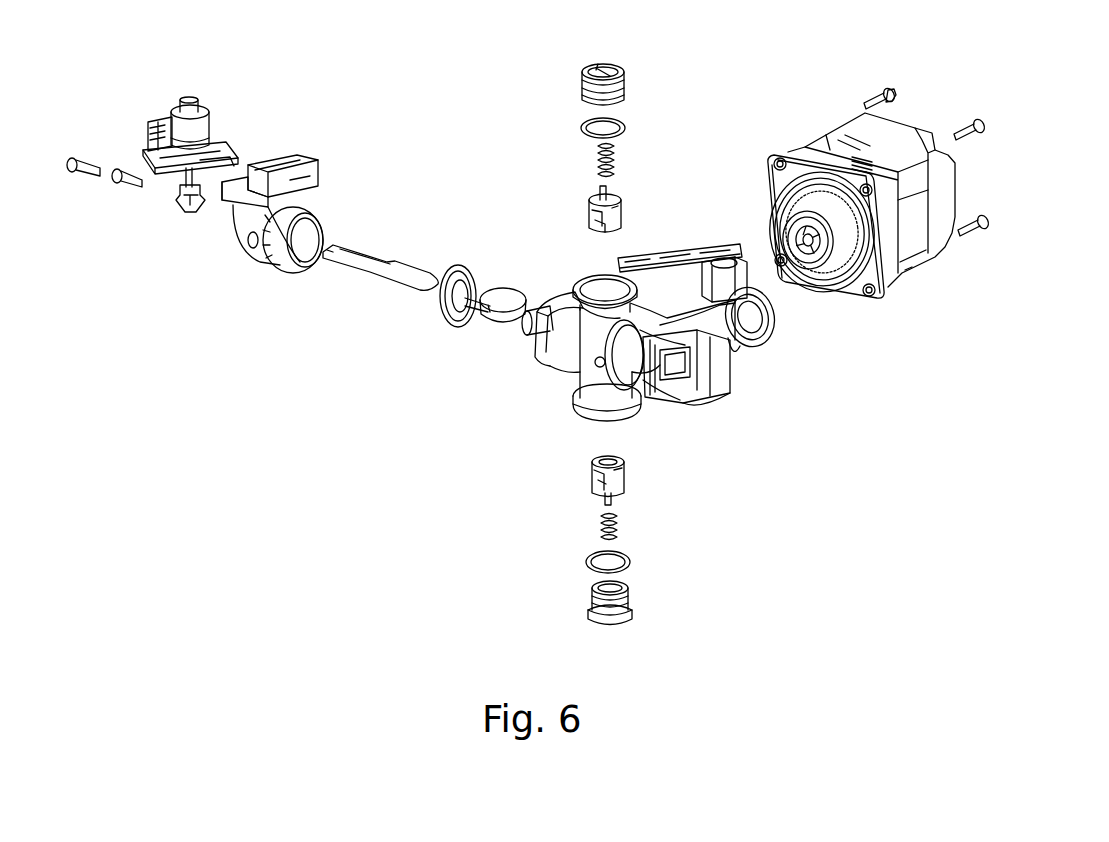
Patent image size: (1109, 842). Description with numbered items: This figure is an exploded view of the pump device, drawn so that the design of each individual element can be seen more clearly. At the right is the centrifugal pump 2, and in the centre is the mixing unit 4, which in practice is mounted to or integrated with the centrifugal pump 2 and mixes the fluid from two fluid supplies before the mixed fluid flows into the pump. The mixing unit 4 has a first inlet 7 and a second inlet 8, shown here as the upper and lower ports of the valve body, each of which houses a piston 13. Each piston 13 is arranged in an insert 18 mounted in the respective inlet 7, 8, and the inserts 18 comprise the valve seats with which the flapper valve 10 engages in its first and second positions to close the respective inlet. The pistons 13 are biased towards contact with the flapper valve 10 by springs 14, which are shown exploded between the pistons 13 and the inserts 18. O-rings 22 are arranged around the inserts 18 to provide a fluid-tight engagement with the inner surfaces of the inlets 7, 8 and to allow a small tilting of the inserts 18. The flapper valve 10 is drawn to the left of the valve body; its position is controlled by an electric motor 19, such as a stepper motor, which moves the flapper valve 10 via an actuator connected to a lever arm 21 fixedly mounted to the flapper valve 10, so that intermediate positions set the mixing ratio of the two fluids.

The centrifugal pump 2 is at (815, 105).
The mixing unit 4 is at (567, 355).
The first inlet 7 is at (603, 288).
The second inlet 8 is at (598, 403).
The flapper valve 10 is at (498, 320).
The piston 13 is at (590, 218).
The spring 14 is at (597, 165).
The insert 18 is at (615, 85).
The electric motor 19 is at (225, 110).
The lever arm 21 is at (188, 198).
The O-ring 22 is at (625, 128).